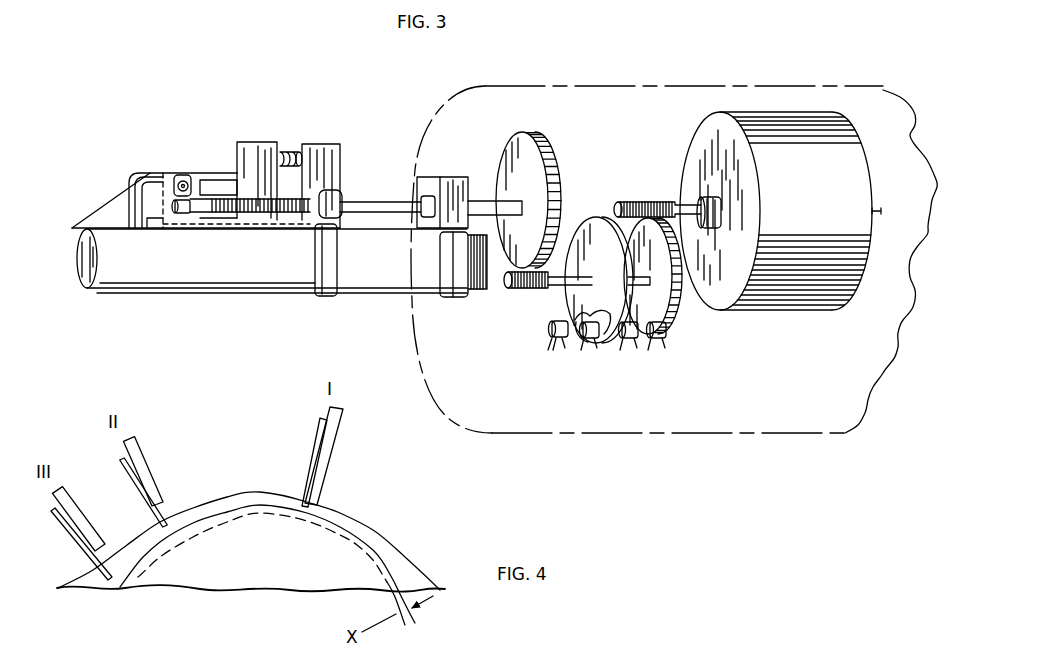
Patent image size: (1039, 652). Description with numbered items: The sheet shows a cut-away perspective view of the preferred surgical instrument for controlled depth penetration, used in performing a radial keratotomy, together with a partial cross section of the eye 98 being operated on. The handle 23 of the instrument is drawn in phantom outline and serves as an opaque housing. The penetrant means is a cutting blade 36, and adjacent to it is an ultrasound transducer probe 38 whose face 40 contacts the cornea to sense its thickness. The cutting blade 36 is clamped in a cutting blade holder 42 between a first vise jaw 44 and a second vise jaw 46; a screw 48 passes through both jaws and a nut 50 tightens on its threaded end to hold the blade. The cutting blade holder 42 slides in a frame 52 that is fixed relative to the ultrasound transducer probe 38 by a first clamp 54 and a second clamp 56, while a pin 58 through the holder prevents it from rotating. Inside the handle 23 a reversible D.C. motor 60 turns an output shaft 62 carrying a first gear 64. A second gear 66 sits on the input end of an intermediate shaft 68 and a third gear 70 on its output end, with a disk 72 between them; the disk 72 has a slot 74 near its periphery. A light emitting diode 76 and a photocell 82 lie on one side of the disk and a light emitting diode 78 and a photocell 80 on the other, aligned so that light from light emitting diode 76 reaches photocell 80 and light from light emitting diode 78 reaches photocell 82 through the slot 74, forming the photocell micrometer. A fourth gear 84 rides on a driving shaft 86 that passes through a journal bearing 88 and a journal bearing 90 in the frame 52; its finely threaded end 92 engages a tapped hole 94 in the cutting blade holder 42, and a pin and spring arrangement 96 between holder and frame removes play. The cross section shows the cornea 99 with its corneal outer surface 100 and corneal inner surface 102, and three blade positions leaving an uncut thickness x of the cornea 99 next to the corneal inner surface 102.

In FIG. 3, the handle 23 is at (627, 85).
In FIG. 3, the cutting blade 36 is at (103, 203).
In FIG. 4, the cutting blade 36 is at (306, 460).
In FIG. 3, the ultrasound transducer probe 38 is at (223, 256).
In FIG. 4, the ultrasound transducer probe 38 is at (325, 480).
In FIG. 3, the face 40 is at (92, 258).
In FIG. 3, the cutting blade holder 42 is at (273, 158).
In FIG. 3, the first vise jaw 44 is at (131, 170).
In FIG. 3, the second vise jaw 46 is at (149, 172).
In FIG. 3, the screw 48 is at (198, 180).
In FIG. 3, the nut 50 is at (188, 174).
In FIG. 3, the frame 52 is at (300, 226).
In FIG. 3, the first clamp 54 is at (326, 295).
In FIG. 3, the second clamp 56 is at (453, 298).
In FIG. 3, the pin 58 is at (212, 212).
In FIG. 3, the reversible D.C. motor 60 is at (838, 222).
In FIG. 3, the output shaft 62 is at (698, 200).
In FIG. 3, the first gear 64 is at (636, 200).
In FIG. 3, the second gear 66 is at (660, 298).
In FIG. 3, the intermediate shaft 68 is at (556, 290).
In FIG. 3, the third gear 70 is at (520, 292).
In FIG. 3, the disk 72 is at (597, 232).
In FIG. 3, the slot 74 is at (618, 336).
In FIG. 3, the light emitting diode 76 is at (563, 340).
In FIG. 3, the light emitting diode 78 is at (660, 344).
In FIG. 3, the photocell 80 is at (631, 341).
In FIG. 3, the photocell 82 is at (598, 341).
In FIG. 3, the fourth gear 84 is at (523, 150).
In FIG. 3, the driving shaft 86 is at (489, 199).
In FIG. 3, the journal bearing 88 is at (450, 190).
In FIG. 3, the journal bearing 90 is at (343, 182).
In FIG. 3, the finely threaded end 92 is at (292, 196).
In FIG. 3, the hole 94 is at (250, 216).
In FIG. 3, the pin and spring arrangement 96 is at (293, 147).
In FIG. 4, the eye 98 is at (253, 566).
In FIG. 4, the cornea 99 is at (398, 568).
In FIG. 4, the corneal outer surface 100 is at (403, 546).
In FIG. 4, the corneal inner surface 102 is at (352, 548).